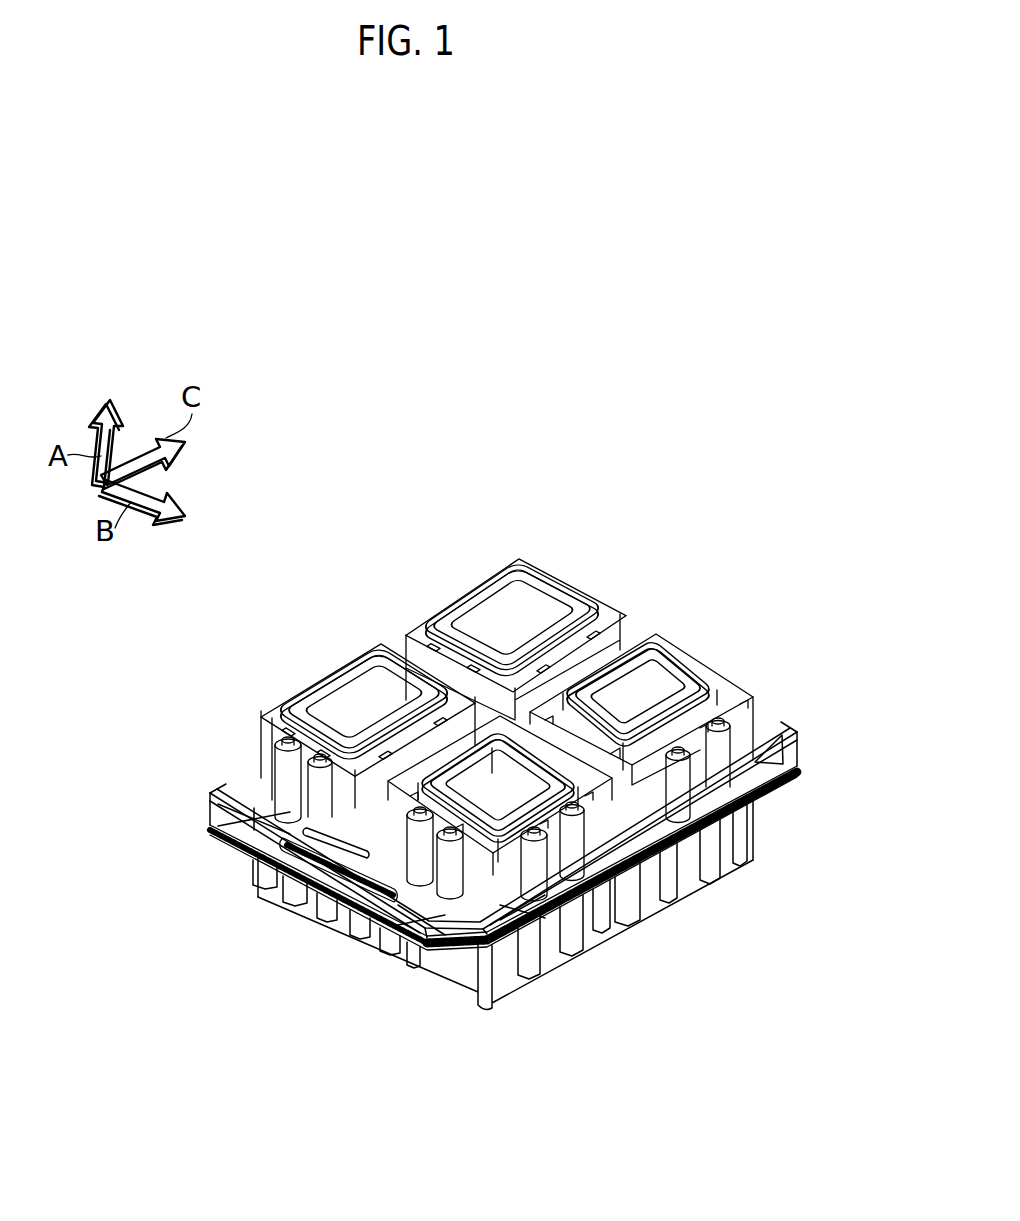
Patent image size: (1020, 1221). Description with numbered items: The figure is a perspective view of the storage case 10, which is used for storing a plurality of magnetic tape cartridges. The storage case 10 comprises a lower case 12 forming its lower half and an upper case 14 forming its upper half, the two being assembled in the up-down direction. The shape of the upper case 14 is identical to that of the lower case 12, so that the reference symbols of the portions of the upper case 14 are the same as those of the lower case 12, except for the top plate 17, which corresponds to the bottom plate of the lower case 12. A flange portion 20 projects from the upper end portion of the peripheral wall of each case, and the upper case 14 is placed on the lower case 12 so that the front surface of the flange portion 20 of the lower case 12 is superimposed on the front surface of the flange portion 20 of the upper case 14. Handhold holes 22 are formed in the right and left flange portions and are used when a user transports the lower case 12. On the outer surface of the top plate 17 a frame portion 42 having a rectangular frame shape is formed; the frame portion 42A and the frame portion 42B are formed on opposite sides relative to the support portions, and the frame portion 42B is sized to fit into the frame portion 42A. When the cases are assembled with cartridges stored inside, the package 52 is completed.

The storage case 10 is at (552, 524).
The lower case 12 is at (752, 858).
The upper case 14 is at (756, 693).
The top plate 17 is at (353, 688).
The flange portion 20 is at (802, 741).
The handhold hole 22 is at (343, 878).
The frame portion 42 is at (470, 784).
The frame portion 42A is at (556, 578).
The frame portion 42B is at (678, 652).
The package 52 is at (339, 557).